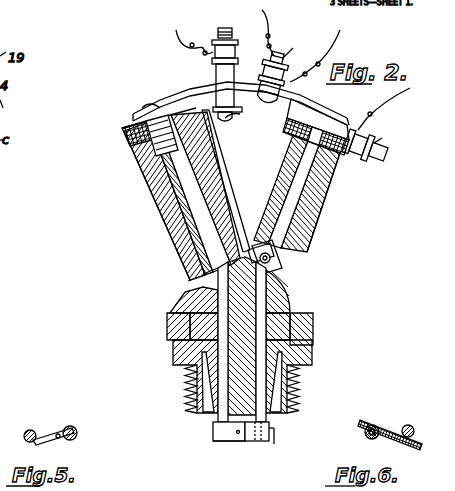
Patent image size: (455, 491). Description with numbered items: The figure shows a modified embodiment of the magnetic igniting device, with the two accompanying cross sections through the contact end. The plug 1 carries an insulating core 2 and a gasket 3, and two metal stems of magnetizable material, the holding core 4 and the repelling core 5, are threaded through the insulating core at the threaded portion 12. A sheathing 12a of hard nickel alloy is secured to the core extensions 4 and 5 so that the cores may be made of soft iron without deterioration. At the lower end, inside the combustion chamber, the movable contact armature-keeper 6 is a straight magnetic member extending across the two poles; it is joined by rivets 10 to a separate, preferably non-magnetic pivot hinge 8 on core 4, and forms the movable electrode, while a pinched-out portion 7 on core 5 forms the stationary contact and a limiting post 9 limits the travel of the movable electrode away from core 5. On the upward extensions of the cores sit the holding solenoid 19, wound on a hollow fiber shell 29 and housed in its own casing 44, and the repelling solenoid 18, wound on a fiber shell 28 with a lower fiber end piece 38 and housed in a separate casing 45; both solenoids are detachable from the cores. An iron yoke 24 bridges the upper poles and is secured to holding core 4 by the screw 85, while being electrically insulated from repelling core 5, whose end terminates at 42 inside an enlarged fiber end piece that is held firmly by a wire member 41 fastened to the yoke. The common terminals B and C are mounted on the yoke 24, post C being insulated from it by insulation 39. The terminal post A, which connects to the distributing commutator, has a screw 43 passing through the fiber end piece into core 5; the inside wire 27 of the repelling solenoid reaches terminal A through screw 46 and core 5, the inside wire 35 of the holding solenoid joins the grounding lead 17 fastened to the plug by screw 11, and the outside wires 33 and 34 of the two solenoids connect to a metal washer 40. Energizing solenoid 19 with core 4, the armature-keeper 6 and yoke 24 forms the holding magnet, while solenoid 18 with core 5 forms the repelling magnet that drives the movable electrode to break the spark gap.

In FIG. 2, the plug 1 is at (173, 350).
In FIG. 2, the insulating core 2 is at (182, 358).
In FIG. 2, the gasket 3 is at (308, 354).
In FIG. 2, the magnetic core 4 is at (220, 388).
In FIG. 2, the magnetic core 5 is at (258, 388).
In FIG. 2, the movable contact armature-keeper 6 is at (248, 441).
In FIG. 5, the movable contact armature-keeper 6 is at (52, 432).
In FIG. 2, the pinched-out portion 7 is at (272, 441).
In FIG. 5, the pinched-out portion 7 is at (31, 430).
In FIG. 6, the pinched-out portion 7 is at (415, 433).
In FIG. 2, the pivot hinge 8 is at (213, 430).
In FIG. 5, the pivot hinge 8 is at (77, 435).
In FIG. 6, the pivot hinge 8 is at (365, 437).
In FIG. 5, the limiting post 9 is at (58, 439).
In FIG. 6, the limiting post 9 is at (364, 425).
In FIG. 2, the rivets 10 is at (237, 434).
In FIG. 6, the rivets 10 is at (398, 434).
In FIG. 2, the screw 11 is at (170, 318).
In FIG. 2, the threaded portion 12 is at (268, 290).
In FIG. 2, the sheathing 12a is at (312, 320).
In FIG. 2, the grounding lead 17 is at (182, 294).
In FIG. 2, the repelling solenoid 18 is at (320, 200).
In FIG. 2, the holding solenoid 19 is at (168, 208).
In FIG. 2, the iron yoke 24 is at (300, 103).
In FIG. 2, the inside wire 27 is at (276, 258).
In FIG. 2, the insulating fiber shell 28 is at (300, 228).
In FIG. 2, the insulating fiber shell 29 is at (185, 230).
In FIG. 2, the outside wire 33 is at (220, 150).
In FIG. 2, the outside wire 34 is at (236, 166).
In FIG. 2, the inside wire 35 is at (190, 279).
In FIG. 2, the lower fiber end piece 38 is at (272, 250).
In FIG. 2, the insulation 39 is at (216, 70).
In FIG. 2, the metal washer 40 is at (242, 114).
In FIG. 2, the wire member 41 is at (325, 118).
In FIG. 2, the core termination 42 is at (290, 127).
In FIG. 2, the screw 43 is at (380, 155).
In FIG. 2, the casing 44 is at (142, 160).
In FIG. 2, the casing 45 is at (330, 180).
In FIG. 2, the screw 46 is at (278, 266).
In FIG. 2, the screw 85 is at (144, 106).
In FIG. 2, the terminal post A is at (384, 115).
In FIG. 2, the terminal B is at (296, 67).
In FIG. 2, the terminal C is at (225, 65).